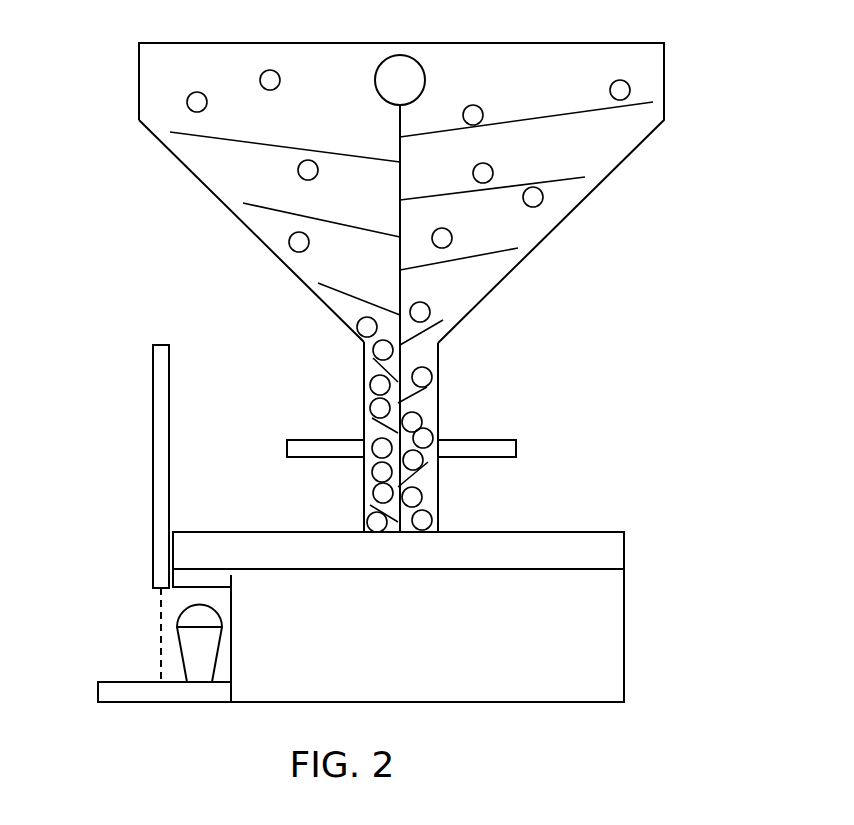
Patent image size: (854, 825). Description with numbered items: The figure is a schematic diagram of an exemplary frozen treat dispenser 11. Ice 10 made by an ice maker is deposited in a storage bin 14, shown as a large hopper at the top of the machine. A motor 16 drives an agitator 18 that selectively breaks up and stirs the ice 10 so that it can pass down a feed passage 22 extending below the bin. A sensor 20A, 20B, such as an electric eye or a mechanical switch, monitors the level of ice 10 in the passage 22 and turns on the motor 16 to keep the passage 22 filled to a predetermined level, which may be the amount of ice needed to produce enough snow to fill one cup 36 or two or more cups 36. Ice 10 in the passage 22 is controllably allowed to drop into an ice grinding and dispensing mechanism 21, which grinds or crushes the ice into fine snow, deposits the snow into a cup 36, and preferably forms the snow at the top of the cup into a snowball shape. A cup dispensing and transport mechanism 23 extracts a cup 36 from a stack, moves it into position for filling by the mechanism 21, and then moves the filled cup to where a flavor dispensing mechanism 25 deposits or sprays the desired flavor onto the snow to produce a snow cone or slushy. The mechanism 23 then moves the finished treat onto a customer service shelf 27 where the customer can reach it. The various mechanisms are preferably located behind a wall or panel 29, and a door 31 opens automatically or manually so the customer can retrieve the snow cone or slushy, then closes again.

The ice 10 is at (540, 185).
The frozen treat dispenser 11 is at (605, 293).
The storage bin 14 is at (130, 78).
The motor 16 is at (400, 80).
The agitator 18 is at (390, 152).
The sensor 20A is at (320, 427).
The sensor 20B is at (492, 430).
The ice grinding and dispensing mechanism 21 is at (398, 550).
The feed passage 22 is at (443, 485).
The cup dispensing and transport mechanism 23 is at (398, 635).
The flavor dispensing mechanism 25 is at (237, 579).
The customer service shelf 27 is at (125, 708).
The wall or panel 29 is at (147, 527).
The door 31 is at (153, 610).
The cup 36 is at (222, 658).